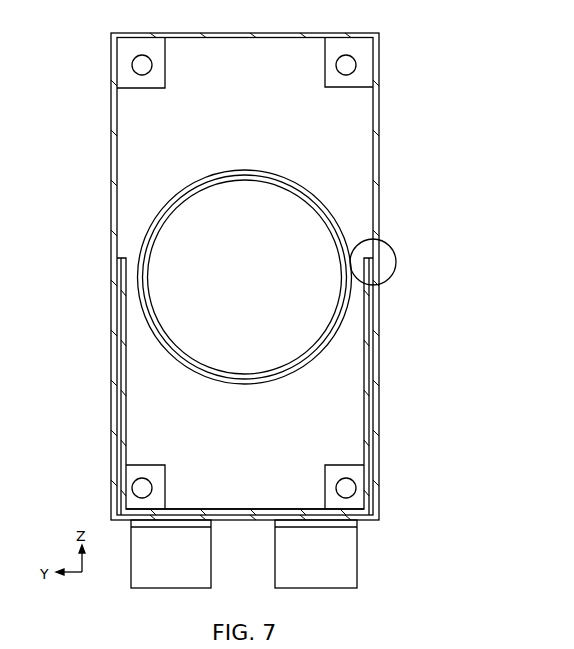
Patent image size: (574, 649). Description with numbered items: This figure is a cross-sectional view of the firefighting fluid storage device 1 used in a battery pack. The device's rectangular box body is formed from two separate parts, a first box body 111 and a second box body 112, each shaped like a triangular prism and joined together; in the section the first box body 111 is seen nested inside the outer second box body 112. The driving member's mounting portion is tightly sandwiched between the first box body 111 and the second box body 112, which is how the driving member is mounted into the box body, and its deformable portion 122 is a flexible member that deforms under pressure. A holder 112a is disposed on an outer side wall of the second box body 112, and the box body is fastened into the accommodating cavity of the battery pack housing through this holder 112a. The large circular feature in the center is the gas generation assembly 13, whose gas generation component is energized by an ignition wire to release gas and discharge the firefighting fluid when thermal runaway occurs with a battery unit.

The firefighting fluid storage device 1 is at (388, 243).
The gas generation assembly 13 is at (250, 186).
The first box body 111 is at (119, 371).
The second box body 112 is at (112, 124).
The holder 112a is at (352, 547).
The deformable portion 122 is at (379, 382).